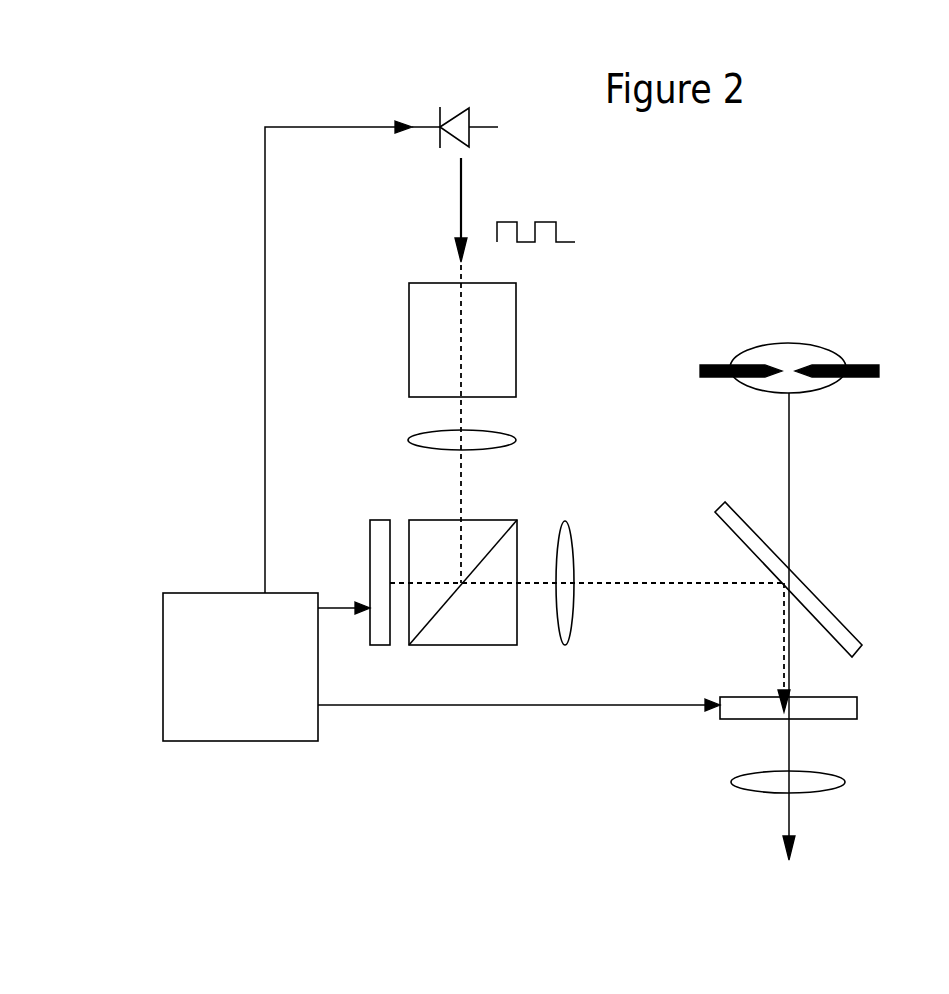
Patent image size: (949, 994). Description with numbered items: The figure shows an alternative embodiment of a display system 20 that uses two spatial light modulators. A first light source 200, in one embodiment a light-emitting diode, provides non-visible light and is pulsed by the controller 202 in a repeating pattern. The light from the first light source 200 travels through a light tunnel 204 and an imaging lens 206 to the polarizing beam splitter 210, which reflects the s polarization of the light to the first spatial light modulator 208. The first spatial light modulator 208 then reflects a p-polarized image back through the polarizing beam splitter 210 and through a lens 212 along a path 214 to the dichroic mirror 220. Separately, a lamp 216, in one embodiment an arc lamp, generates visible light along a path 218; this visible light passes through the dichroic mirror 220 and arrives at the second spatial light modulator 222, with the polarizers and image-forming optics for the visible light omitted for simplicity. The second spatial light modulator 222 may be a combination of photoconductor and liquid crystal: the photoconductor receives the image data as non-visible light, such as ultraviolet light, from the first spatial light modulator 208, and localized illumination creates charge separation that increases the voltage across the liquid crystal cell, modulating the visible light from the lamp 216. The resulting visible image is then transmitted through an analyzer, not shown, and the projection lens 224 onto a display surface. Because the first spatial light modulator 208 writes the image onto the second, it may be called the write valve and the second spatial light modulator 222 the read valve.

The display system 20 is at (122, 72).
The first light source 200 is at (470, 105).
The controller 202 is at (165, 592).
The light tunnel 204 is at (516, 296).
The imaging lens 206 is at (515, 432).
The first spatial light modulator 208 is at (390, 520).
The polarizing beam splitter 210 is at (517, 520).
The lens 212 is at (573, 526).
The path 214 is at (622, 583).
The lamp 216 is at (825, 345).
The path 218 is at (791, 500).
The dichroic mirror 220 is at (838, 618).
The second spatial light modulator 222 is at (857, 703).
The projection lens 224 is at (833, 774).